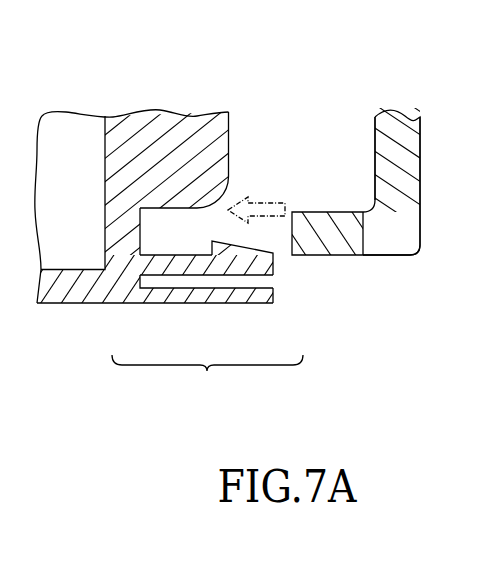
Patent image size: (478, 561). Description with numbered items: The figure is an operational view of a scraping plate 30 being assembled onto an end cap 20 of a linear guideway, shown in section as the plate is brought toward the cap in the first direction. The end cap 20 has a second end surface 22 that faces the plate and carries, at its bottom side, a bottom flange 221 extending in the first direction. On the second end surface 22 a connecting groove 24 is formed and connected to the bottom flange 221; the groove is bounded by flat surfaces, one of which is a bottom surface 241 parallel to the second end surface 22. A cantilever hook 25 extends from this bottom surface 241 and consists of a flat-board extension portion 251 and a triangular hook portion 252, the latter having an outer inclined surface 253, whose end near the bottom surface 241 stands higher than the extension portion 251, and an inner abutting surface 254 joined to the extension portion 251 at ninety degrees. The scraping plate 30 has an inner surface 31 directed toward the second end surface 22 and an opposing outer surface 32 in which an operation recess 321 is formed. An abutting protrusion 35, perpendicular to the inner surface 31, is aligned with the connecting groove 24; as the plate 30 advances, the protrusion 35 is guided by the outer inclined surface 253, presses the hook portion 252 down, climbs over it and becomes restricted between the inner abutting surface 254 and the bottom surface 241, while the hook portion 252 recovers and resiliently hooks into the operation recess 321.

The end cap 20 is at (120, 116).
The second end surface 22 is at (231, 114).
The connecting groove 24 is at (155, 227).
The bottom surface 241 is at (140, 228).
The cantilever hook 25 is at (207, 380).
The extension portion 251 is at (214, 242).
The hook portion 252 is at (226, 250).
The outer inclined surface 253 is at (250, 255).
The inner abutting surface 254 is at (222, 248).
The bottom flange 221 is at (273, 293).
The scraping plate 30 is at (398, 115).
The inner surface 31 is at (374, 137).
The outer surface 32 is at (425, 157).
The abutting protrusion 35 is at (317, 218).
The operation recess 321 is at (392, 235).